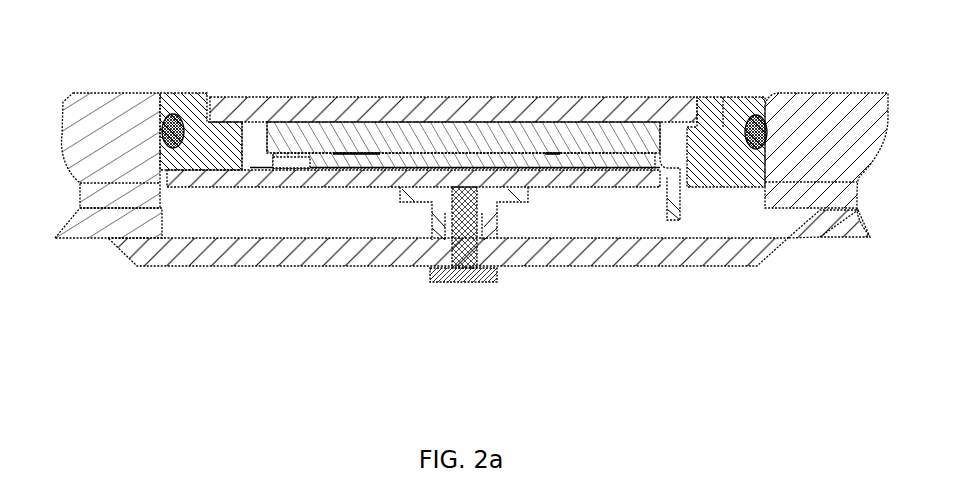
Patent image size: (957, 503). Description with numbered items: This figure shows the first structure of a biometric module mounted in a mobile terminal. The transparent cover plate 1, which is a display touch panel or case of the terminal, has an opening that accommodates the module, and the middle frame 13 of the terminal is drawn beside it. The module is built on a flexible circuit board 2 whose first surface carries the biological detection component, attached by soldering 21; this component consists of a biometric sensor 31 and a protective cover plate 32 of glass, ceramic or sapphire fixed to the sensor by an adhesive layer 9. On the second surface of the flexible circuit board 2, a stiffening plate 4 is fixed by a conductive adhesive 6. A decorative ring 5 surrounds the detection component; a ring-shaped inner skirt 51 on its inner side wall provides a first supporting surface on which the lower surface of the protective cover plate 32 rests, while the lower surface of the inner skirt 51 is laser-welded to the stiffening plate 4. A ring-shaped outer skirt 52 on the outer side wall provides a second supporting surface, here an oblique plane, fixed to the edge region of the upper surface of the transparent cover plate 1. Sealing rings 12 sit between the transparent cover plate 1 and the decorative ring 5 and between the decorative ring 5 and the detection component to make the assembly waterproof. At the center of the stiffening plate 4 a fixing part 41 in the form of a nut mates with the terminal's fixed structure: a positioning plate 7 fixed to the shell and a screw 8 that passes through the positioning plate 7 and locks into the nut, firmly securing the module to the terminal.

The transparent cover plate 1 is at (112, 103).
The middle frame 13 is at (84, 178).
The positioning plate 7 is at (790, 245).
The decorative ring 5 is at (183, 96).
The outer skirt 52 is at (168, 110).
The inner skirt 51 is at (232, 152).
The protective cover plate 32 is at (293, 98).
The adhesive layer 9 is at (382, 100).
The biometric sensor 31 is at (485, 100).
The soldering 21 is at (350, 155).
The flexible circuit board 2 is at (249, 172).
The conductive adhesive 6 is at (600, 172).
The fixing part 41 is at (490, 210).
The screw 8 is at (460, 262).
The stiffening plate 4 is at (693, 177).
The sealing rings 12 is at (696, 100).